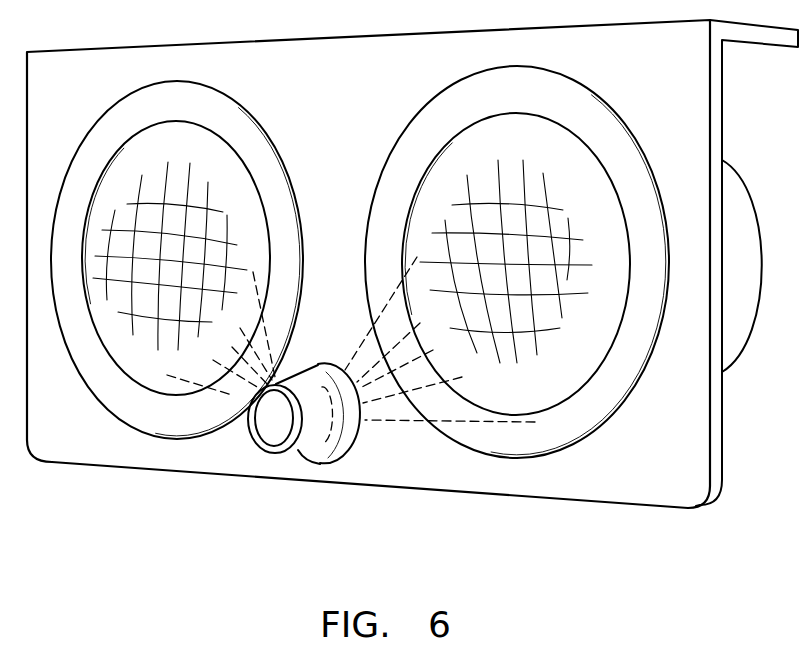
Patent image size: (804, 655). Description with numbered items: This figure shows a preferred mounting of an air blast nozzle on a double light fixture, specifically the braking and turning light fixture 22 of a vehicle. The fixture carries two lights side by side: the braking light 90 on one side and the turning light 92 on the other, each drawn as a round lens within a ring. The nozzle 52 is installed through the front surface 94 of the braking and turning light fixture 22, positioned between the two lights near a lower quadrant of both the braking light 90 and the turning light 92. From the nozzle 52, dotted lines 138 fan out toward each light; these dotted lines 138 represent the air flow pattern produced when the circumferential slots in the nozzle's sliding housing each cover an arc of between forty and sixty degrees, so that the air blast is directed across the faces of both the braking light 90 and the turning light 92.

The braking and turning light fixture 22 is at (732, 538).
The nozzle 52 is at (348, 458).
The braking light 90 is at (263, 128).
The turning light 92 is at (608, 102).
The front surface 94 is at (722, 410).
The dotted lines 138 is at (237, 392).